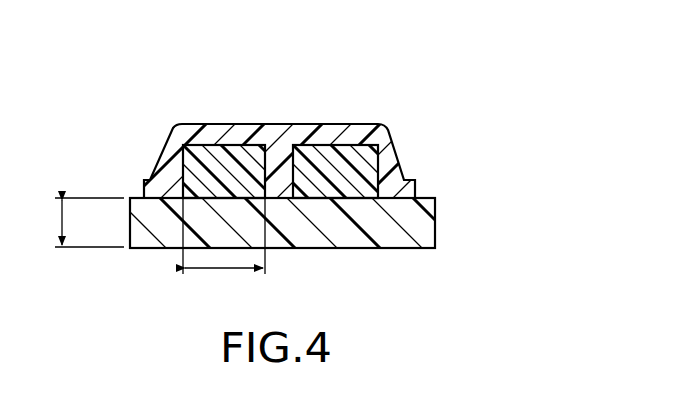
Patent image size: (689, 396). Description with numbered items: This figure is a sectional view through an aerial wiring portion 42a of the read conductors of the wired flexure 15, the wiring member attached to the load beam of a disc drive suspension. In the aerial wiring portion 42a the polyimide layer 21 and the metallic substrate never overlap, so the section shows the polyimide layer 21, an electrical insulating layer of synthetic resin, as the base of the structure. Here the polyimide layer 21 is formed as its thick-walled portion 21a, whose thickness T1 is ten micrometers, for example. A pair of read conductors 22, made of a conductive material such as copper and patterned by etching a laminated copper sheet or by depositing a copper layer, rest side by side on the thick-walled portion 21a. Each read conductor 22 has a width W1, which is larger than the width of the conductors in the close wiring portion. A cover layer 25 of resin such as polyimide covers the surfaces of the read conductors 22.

The wired flexure 15 is at (320, 161).
The aerial wiring portion 42a is at (286, 113).
The polyimide layer 21 is at (427, 217).
The thick-walled portion 21a is at (312, 236).
The read conductors 22 is at (217, 125).
The cover layer 25 is at (378, 125).
The thickness of the thick-walled portion T1 is at (76, 222).
The width of the read conductor W1 is at (224, 249).